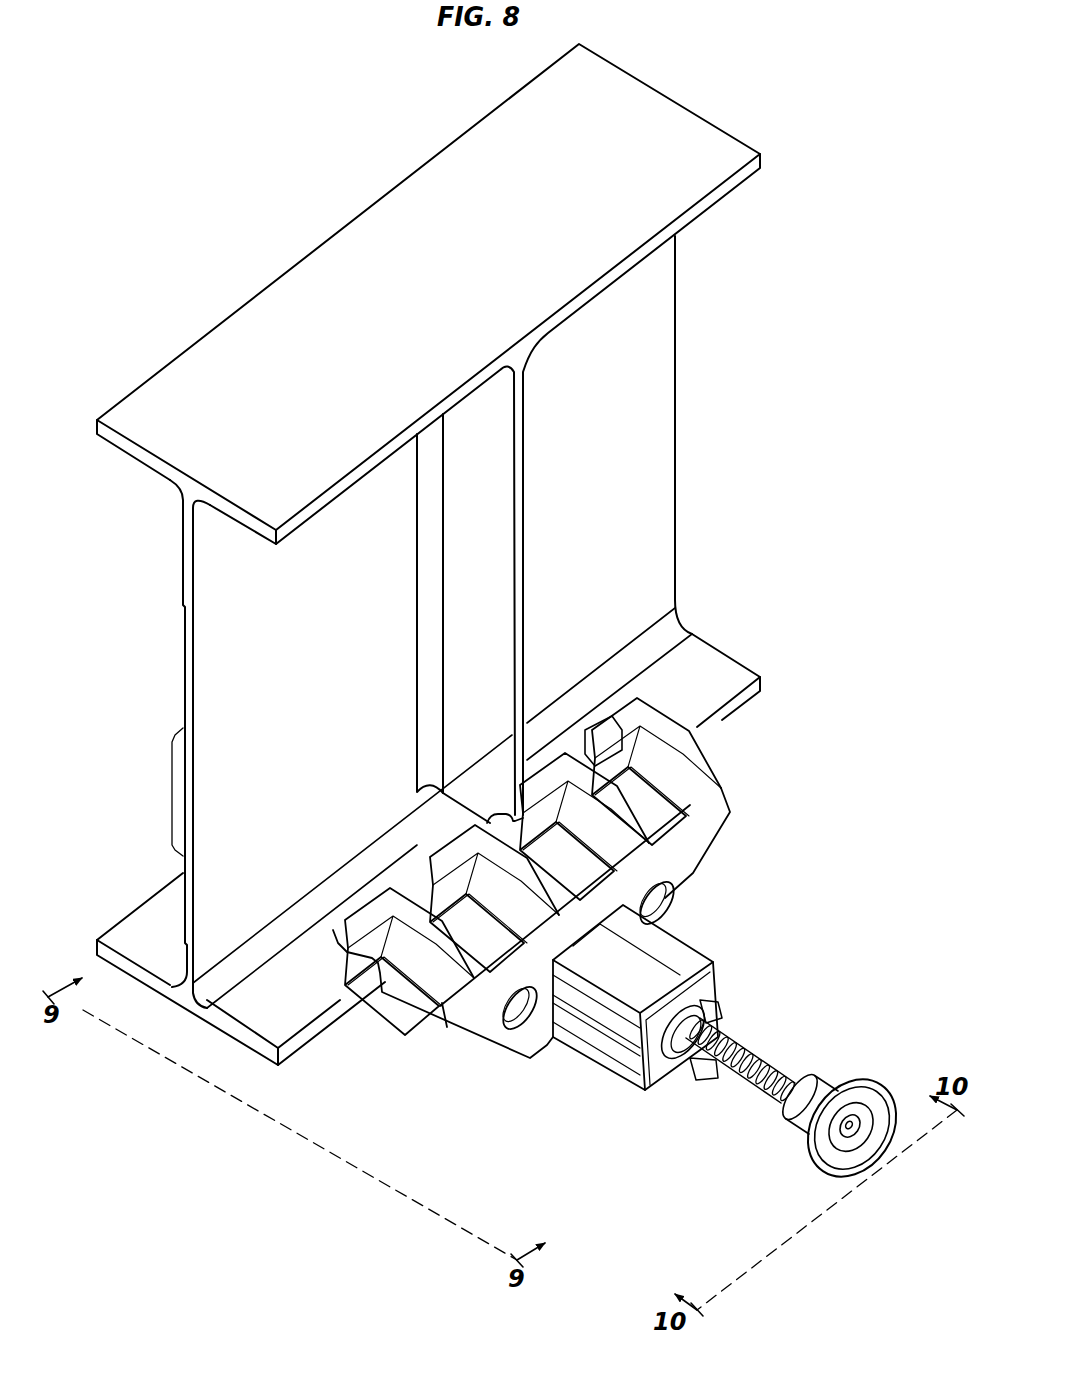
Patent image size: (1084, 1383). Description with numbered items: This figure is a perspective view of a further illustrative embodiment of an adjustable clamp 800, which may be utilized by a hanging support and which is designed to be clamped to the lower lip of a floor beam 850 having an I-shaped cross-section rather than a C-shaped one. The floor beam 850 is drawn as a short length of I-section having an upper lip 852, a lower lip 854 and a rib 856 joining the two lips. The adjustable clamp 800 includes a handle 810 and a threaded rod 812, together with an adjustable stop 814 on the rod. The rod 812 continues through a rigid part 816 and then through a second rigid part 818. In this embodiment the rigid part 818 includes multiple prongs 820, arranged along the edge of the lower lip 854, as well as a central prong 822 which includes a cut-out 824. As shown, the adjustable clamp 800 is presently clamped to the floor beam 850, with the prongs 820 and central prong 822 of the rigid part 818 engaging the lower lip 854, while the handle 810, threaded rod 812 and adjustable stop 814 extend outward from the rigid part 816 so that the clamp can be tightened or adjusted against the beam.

The adjustable clamp 800 is at (848, 888).
The handle 810 is at (850, 1088).
The rod 812 is at (750, 1050).
The adjustable stop 814 is at (718, 1005).
The rigid part 816 is at (680, 950).
The rigid part 818 is at (706, 838).
The prongs 820 is at (660, 712).
The central prong 822 is at (536, 772).
The cut-out 824 is at (508, 806).
The floor beam 850 is at (668, 424).
The upper lip 852 is at (710, 133).
The lower lip 854 is at (735, 668).
The rib 856 is at (525, 516).